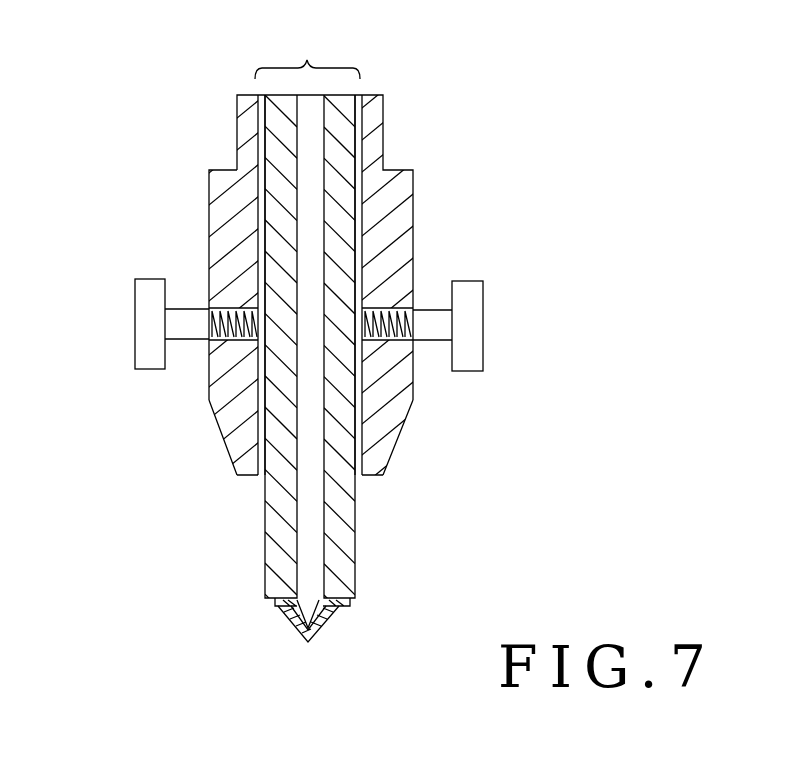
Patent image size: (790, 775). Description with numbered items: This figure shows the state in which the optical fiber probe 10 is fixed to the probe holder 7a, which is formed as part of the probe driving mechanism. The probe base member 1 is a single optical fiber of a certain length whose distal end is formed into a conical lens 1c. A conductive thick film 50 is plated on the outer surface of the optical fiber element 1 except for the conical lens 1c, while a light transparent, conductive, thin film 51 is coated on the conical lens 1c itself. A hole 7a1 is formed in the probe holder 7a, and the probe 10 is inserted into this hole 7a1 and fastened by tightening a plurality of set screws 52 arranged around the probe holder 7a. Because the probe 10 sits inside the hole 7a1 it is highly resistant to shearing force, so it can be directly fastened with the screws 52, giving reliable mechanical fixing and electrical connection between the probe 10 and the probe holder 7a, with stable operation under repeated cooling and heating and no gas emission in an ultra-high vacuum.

The probe 10 is at (326, 47).
The conductive thick film 50 is at (278, 143).
The probe holder 7a is at (389, 222).
The hole 7a1 is at (357, 430).
The set screws 52 is at (135, 308).
The probe base member 1 is at (303, 521).
The conical lens 1c is at (303, 612).
The light transparent conductive thin film 51 is at (322, 630).